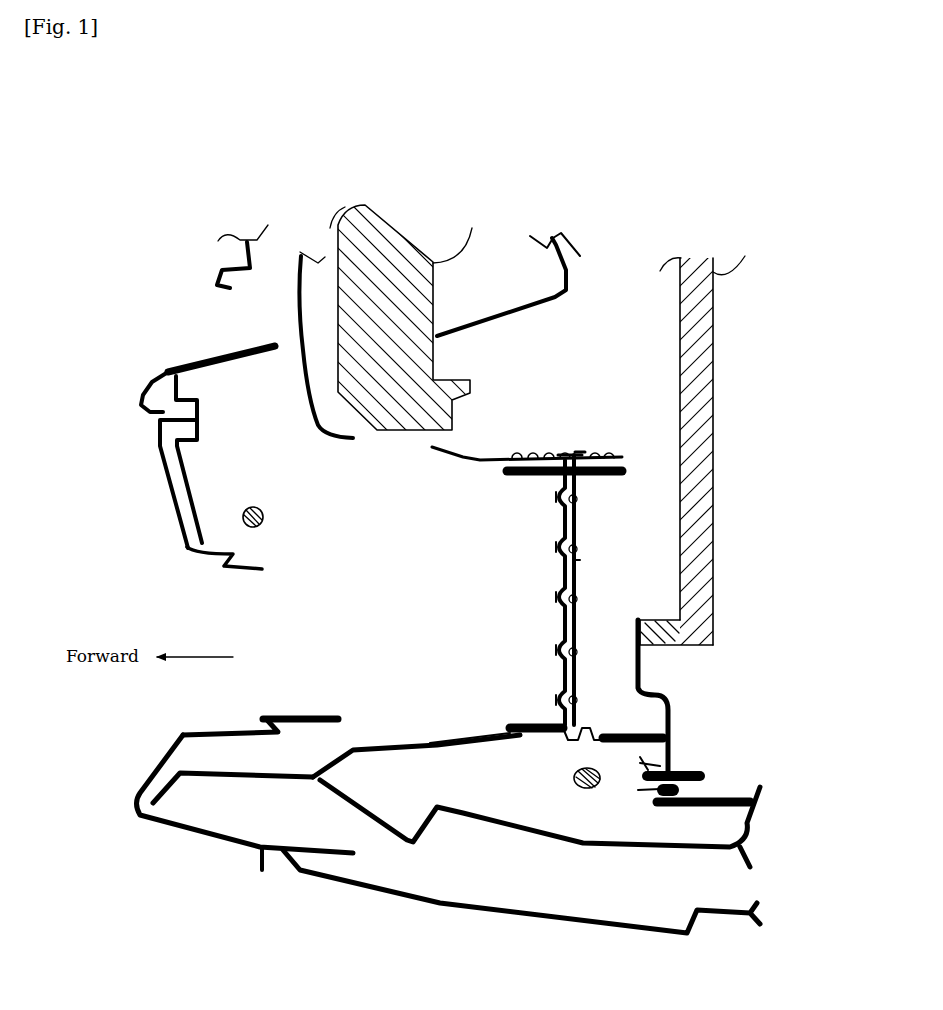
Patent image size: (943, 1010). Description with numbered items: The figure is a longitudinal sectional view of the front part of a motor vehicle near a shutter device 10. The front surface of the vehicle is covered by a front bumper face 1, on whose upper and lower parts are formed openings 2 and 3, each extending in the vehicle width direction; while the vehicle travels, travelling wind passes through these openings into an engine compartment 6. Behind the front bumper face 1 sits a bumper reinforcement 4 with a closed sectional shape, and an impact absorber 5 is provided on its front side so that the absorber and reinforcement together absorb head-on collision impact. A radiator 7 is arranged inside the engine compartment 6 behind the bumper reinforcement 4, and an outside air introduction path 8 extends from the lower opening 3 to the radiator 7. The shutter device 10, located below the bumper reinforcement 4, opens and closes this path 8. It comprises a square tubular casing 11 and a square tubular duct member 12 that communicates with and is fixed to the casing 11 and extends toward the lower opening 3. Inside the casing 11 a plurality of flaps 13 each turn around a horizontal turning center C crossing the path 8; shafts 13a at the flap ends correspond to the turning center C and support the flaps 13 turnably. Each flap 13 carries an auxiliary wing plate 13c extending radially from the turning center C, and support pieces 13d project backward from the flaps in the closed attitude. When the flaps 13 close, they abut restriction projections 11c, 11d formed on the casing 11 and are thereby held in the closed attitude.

The front bumper face 1 is at (165, 501).
The upper opening 2 is at (242, 275).
The lower opening 3 is at (273, 648).
The bumper reinforcement 4 is at (522, 320).
The impact absorber 5 is at (371, 226).
The engine compartment 6 is at (760, 470).
The radiator 7 is at (718, 382).
The outside air introduction path 8 is at (415, 599).
The shutter device 10 is at (606, 440).
The casing 11 is at (605, 457).
The restriction projection 11c is at (579, 452).
The restriction projection 11d is at (574, 721).
The duct member 12 is at (468, 448).
The flap 13 is at (557, 556).
The shaft 13a is at (578, 513).
The auxiliary wing plate 13c is at (559, 517).
The support piece 13d is at (578, 483).
The turning center C is at (580, 500).